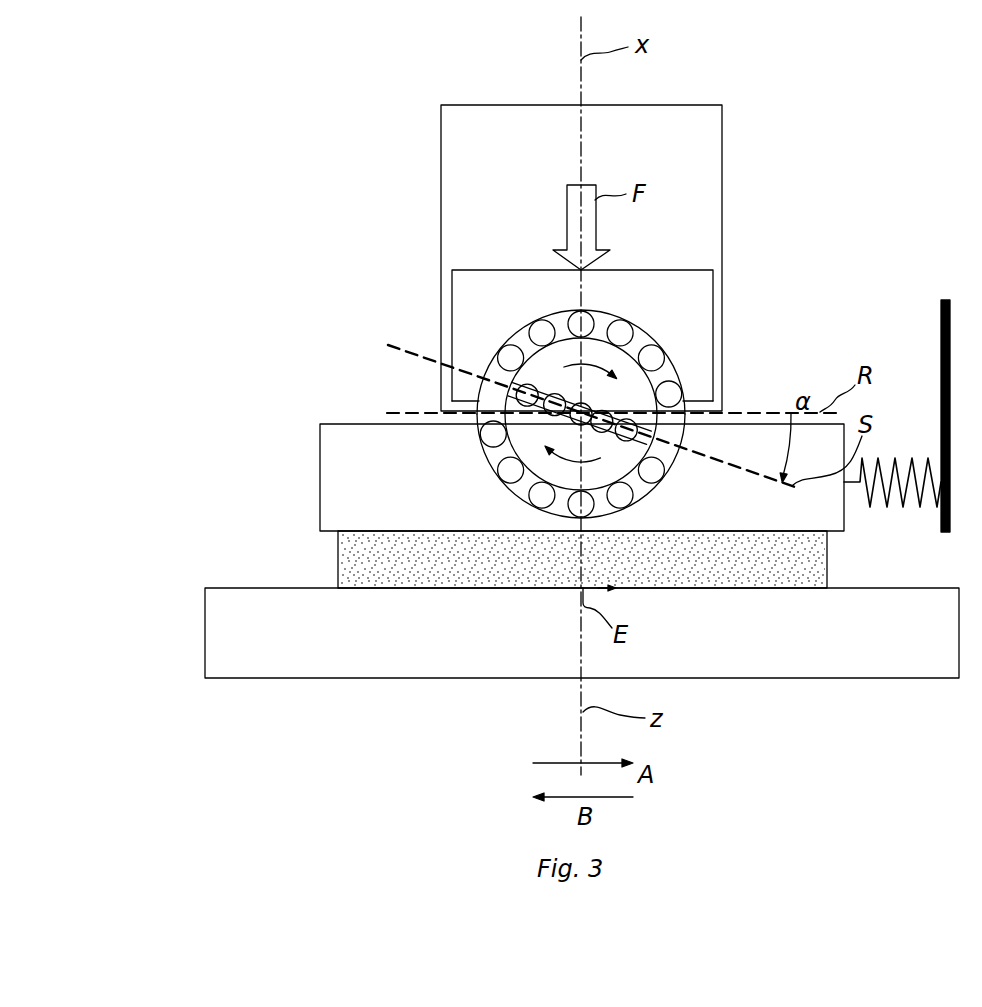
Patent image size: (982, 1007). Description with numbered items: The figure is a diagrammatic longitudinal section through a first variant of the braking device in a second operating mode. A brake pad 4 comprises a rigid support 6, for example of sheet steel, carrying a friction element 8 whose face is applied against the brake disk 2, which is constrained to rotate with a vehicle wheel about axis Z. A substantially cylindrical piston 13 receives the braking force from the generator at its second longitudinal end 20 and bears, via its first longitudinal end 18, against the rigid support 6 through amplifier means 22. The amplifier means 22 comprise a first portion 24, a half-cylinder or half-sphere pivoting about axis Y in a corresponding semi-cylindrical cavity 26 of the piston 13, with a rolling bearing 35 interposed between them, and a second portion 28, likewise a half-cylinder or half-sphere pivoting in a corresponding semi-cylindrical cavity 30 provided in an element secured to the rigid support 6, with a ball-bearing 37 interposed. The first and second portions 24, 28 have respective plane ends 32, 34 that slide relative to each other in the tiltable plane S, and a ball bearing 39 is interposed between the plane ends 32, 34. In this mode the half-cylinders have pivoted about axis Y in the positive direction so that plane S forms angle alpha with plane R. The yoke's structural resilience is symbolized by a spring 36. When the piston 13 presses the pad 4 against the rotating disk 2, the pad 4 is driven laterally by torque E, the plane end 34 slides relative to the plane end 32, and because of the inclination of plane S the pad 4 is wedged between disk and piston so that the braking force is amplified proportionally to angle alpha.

The second element 2 is at (220, 646).
The first element 4 is at (506, 506).
The rigid support 6 is at (337, 478).
The friction element 8 is at (338, 555).
The piston 13 is at (697, 292).
The first longitudinal end 18 is at (712, 410).
The second longitudinal end 20 is at (647, 268).
The amplifier means 22 is at (503, 325).
The first portion 24 is at (553, 330).
The semi-cylindrical cavity 26 is at (668, 340).
The second portion 28 is at (485, 464).
The semi-cylindrical cavity 30 is at (658, 468).
The plane end 32 is at (655, 437).
The plane end 34 is at (663, 433).
The rolling bearing 35 is at (505, 360).
The spring 36 is at (920, 455).
The ball-bearing 37 is at (543, 503).
The ball bearing 39 is at (445, 403).